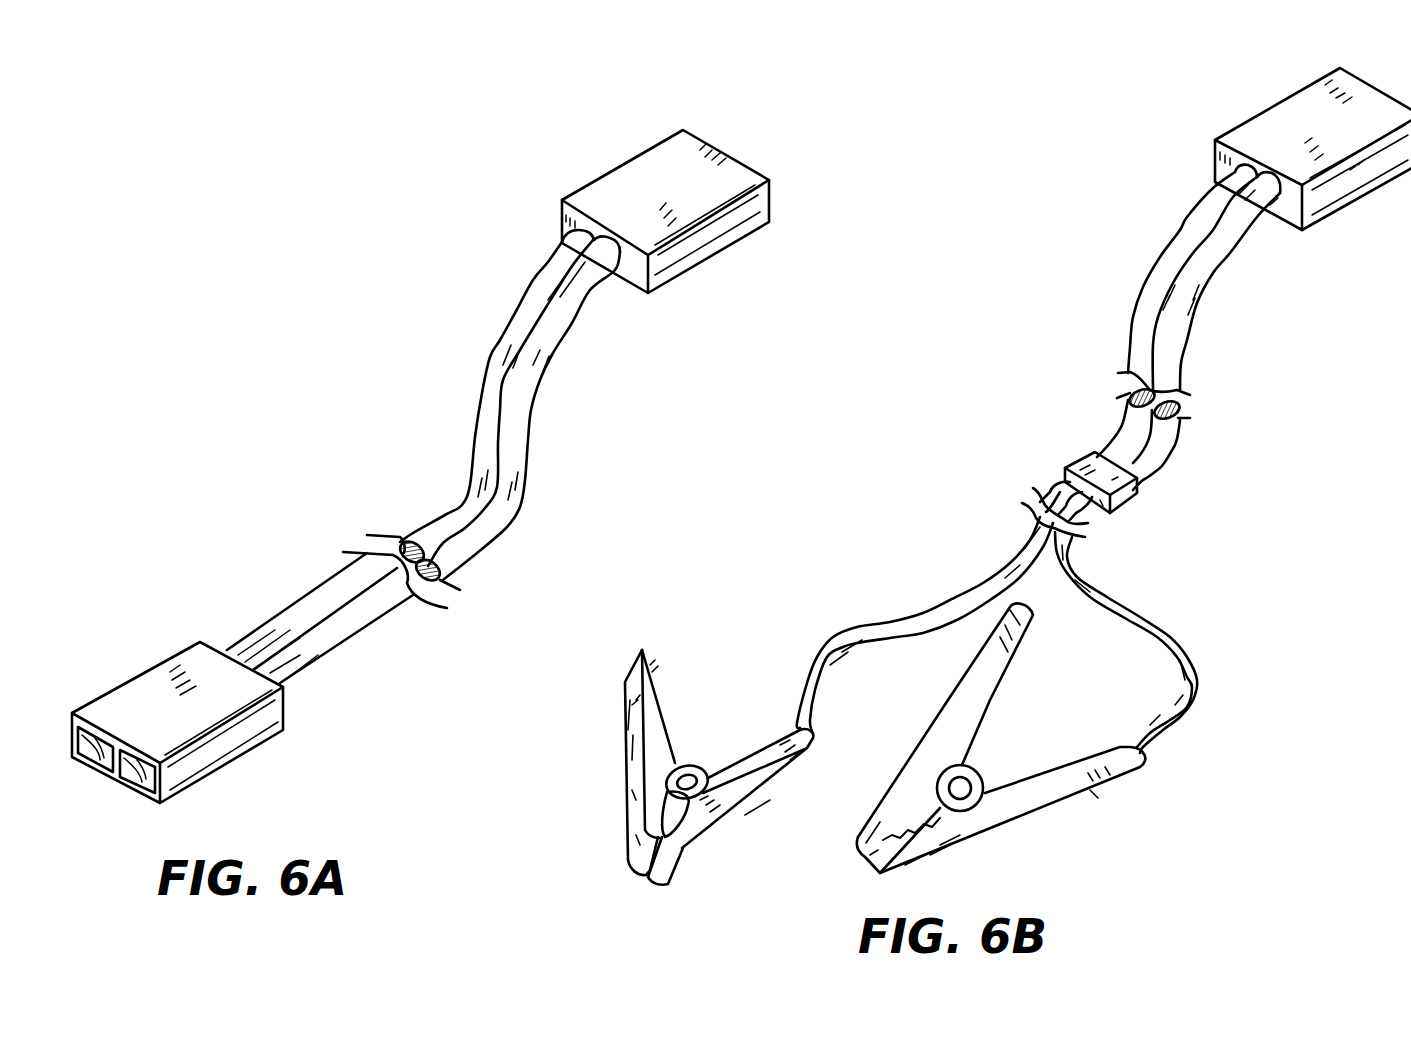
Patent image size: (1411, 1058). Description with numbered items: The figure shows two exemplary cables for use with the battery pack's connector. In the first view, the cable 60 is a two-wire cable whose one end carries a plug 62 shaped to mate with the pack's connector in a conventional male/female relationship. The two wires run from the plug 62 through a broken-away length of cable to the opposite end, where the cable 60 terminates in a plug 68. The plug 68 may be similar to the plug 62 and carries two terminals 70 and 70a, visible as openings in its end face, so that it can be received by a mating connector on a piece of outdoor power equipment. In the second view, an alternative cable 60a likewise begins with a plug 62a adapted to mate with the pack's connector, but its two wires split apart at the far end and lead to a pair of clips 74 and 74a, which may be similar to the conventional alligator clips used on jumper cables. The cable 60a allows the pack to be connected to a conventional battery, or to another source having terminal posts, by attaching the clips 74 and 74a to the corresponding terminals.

In FIG. 6A, the cable 60 is at (416, 332).
In FIG. 6A, the plug 62 is at (629, 172).
In FIG. 6A, the plug 68 is at (148, 678).
In FIG. 6A, the terminal 70 is at (105, 753).
In FIG. 6A, the terminal 70a is at (148, 772).
In FIG. 6B, the cable 60a is at (1036, 334).
In FIG. 6B, the plug 62a is at (1263, 122).
In FIG. 6B, the clip 74 is at (650, 663).
In FIG. 6B, the clip 74a is at (1053, 792).